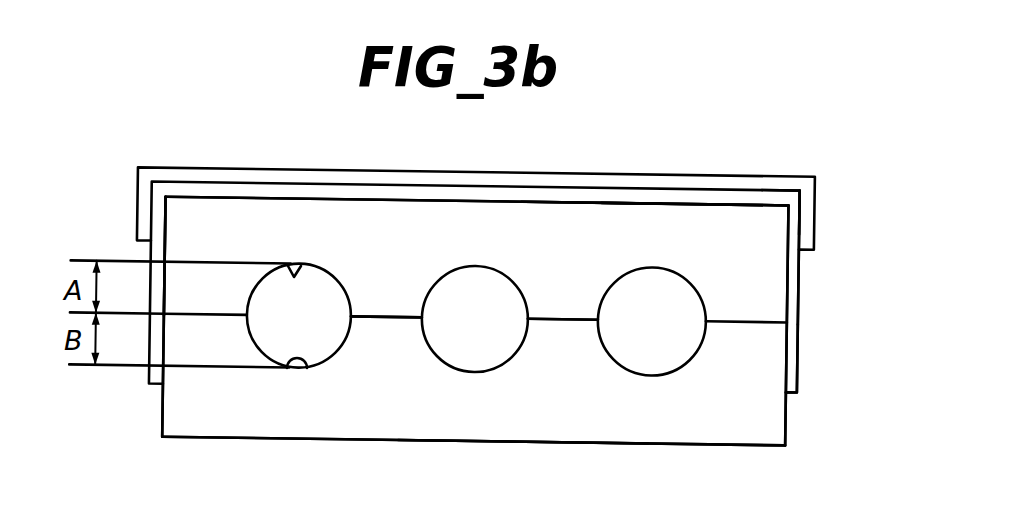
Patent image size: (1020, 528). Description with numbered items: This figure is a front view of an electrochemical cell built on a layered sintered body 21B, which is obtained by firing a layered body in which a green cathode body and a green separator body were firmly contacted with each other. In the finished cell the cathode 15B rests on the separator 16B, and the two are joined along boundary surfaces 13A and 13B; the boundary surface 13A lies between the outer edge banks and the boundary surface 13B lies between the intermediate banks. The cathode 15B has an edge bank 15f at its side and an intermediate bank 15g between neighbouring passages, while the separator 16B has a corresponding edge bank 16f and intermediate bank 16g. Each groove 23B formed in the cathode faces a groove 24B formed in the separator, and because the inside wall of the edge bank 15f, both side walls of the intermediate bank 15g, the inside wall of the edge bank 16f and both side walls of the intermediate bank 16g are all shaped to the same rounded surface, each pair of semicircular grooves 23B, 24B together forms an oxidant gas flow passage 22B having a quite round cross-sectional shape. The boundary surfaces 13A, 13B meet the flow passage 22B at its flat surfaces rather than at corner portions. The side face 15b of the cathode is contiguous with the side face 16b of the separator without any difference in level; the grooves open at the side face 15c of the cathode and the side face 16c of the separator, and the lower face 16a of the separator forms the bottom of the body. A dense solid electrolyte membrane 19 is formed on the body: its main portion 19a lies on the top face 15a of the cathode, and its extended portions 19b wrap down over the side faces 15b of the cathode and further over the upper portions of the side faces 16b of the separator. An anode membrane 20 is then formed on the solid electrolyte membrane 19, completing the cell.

The boundary surface 13A is at (224, 317).
The boundary surface 13B is at (398, 320).
The first plate 15B is at (758, 290).
The top face 15a is at (435, 198).
The side face 15b is at (790, 268).
The side face 15c is at (380, 233).
The edge bank 15f is at (190, 303).
The intermediate bank 15g is at (372, 302).
The separator 16B is at (757, 420).
The lower edge of second plate 16a is at (589, 444).
The side face 16b is at (788, 370).
The side face 16c is at (530, 415).
The edge bank 16f is at (722, 340).
The intermediate bank 16g is at (568, 337).
The solid electrolyte membrane 19 is at (593, 197).
The main portion 19a is at (677, 196).
The extended portions 19b is at (790, 323).
The anode membrane 20 is at (522, 183).
The layered sintered body 21B is at (796, 214).
The oxidant gas flow passage 22B is at (328, 331).
The groove 23B is at (293, 265).
The groove 24B is at (300, 369).